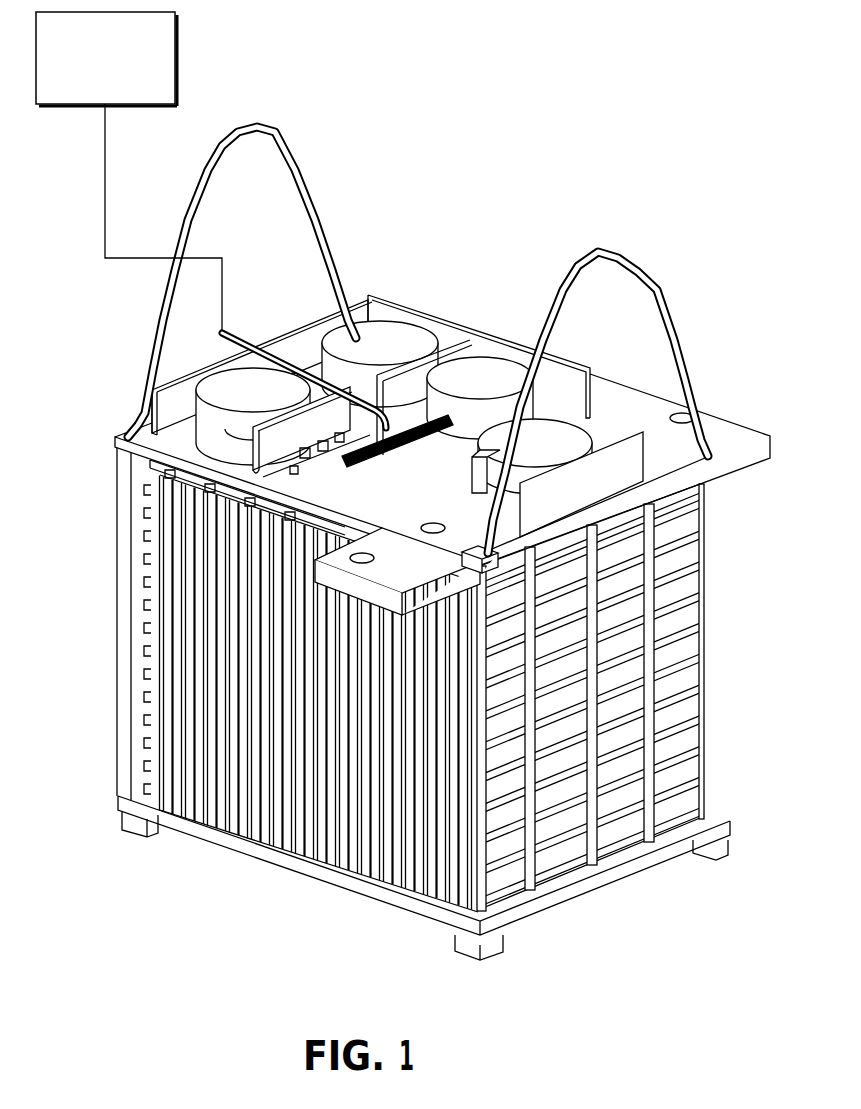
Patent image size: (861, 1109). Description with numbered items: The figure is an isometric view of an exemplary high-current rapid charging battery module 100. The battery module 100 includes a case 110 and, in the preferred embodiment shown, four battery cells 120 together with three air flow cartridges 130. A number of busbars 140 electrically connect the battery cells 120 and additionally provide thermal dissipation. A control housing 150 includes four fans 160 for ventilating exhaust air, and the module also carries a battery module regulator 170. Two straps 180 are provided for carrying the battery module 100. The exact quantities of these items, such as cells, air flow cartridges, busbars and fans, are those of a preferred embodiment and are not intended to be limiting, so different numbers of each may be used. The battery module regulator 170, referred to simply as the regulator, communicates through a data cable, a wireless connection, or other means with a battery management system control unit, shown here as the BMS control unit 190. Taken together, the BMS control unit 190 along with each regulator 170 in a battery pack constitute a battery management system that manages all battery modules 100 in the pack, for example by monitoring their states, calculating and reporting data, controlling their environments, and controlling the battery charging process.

The high-current rapid charging battery module 100 is at (408, 543).
The case 110 is at (118, 803).
The battery cells 120 is at (680, 775).
The air flow cartridges 130 is at (648, 694).
The busbars 140 is at (343, 582).
The control housing 150 is at (380, 477).
The fans 160 is at (212, 425).
The battery module regulator 170 is at (255, 490).
The straps 180 is at (155, 338).
The BMS control unit 190 is at (178, 57).